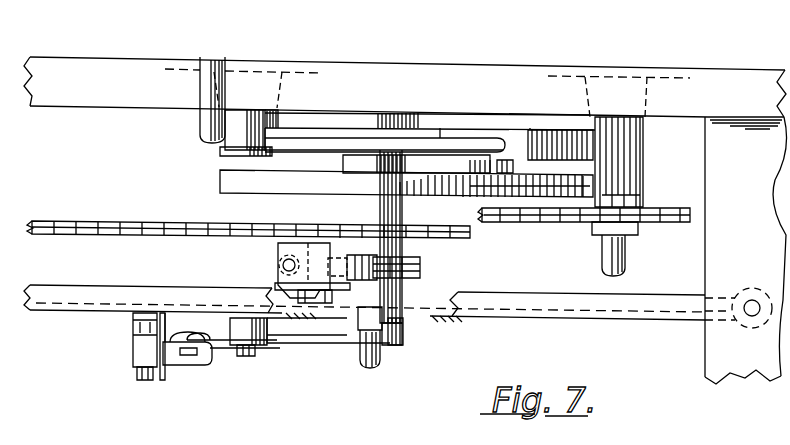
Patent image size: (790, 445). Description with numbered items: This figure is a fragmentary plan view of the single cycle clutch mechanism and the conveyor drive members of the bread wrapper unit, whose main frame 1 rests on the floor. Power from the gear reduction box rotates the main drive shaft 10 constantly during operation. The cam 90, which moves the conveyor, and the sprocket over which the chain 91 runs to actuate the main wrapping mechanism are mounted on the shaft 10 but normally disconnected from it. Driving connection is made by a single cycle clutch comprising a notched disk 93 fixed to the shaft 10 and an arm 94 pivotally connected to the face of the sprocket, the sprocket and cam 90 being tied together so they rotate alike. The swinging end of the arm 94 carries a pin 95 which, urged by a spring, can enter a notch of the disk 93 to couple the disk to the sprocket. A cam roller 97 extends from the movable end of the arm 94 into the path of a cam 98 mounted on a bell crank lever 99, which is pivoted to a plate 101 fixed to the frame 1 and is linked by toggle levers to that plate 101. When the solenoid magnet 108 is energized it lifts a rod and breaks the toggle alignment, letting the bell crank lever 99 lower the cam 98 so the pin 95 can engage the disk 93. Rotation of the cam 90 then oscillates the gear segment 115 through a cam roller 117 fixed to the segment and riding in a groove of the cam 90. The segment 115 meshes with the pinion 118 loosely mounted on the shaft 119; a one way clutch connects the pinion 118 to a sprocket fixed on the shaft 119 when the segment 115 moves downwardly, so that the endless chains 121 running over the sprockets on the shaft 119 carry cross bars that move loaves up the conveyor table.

The main frame 1 is at (140, 68).
The main drive shaft 10 is at (362, 352).
The cam 90 is at (242, 181).
The chain 91 is at (64, 226).
The notched disk 93 is at (405, 272).
The arm 94 is at (280, 253).
The pin 95 is at (423, 268).
The cam roller 97 is at (395, 322).
The cam 98 is at (392, 345).
The bell crank lever 99 is at (297, 344).
The plate 101 is at (68, 300).
The solenoid magnet 108 is at (177, 352).
The gear segment 115 is at (522, 140).
The cam roller 117 is at (478, 190).
The pinion 118 is at (615, 145).
The shaft 119 is at (618, 255).
The endless chains 121 is at (540, 223).